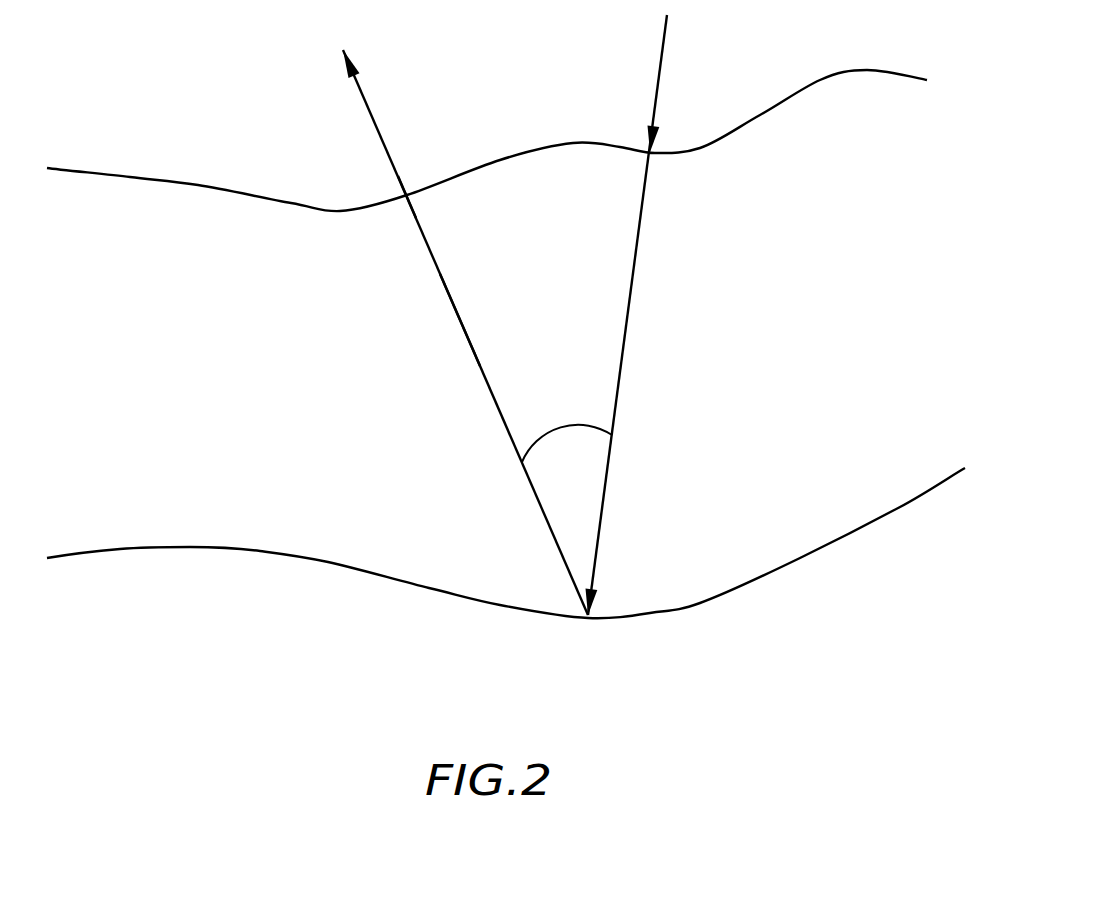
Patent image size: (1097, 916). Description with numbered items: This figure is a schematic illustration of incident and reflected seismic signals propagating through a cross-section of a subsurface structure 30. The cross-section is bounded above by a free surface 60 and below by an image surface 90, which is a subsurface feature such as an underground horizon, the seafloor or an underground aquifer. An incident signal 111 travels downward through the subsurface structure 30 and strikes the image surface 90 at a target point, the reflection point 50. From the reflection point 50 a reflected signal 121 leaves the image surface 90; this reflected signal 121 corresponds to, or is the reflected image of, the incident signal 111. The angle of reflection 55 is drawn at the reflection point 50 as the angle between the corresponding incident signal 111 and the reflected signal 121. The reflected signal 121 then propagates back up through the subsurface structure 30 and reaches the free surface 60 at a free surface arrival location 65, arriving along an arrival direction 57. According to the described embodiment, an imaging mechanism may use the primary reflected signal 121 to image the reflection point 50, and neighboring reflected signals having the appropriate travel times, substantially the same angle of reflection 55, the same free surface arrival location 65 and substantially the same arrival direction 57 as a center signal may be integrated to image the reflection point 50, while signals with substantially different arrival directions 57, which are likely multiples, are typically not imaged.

The subsurface structure 30 is at (161, 360).
The reflection point 50 is at (593, 588).
The angle of reflection 55 is at (553, 427).
The arrival direction 57 is at (498, 410).
The free surface 60 is at (700, 148).
The free surface arrival location 65 is at (407, 193).
The image surface 90 is at (800, 558).
The incident signal 111 is at (633, 288).
The reflected signal 121 is at (457, 308).